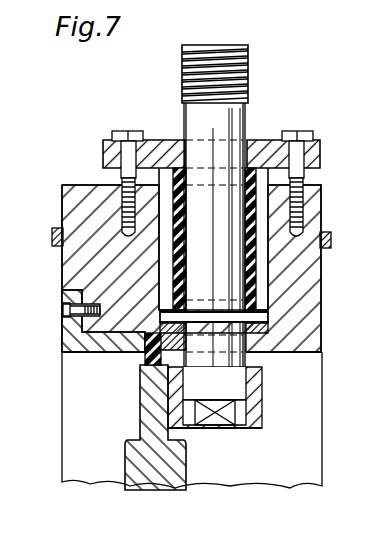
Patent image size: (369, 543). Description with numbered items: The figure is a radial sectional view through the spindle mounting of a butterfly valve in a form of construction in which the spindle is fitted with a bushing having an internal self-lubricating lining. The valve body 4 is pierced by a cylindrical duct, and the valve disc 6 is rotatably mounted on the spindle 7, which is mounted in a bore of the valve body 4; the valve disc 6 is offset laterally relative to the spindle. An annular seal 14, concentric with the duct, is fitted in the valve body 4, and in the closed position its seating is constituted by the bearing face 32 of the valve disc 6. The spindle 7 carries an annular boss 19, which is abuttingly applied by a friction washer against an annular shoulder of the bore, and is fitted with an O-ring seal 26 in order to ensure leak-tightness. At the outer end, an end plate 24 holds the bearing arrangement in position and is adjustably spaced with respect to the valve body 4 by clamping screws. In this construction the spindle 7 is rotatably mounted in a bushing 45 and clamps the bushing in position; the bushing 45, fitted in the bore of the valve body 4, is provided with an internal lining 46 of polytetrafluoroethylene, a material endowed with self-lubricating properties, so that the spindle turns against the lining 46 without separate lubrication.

The valve body 4 is at (312, 275).
The valve disc 6 is at (148, 468).
The spindle 7 is at (217, 118).
The annular seal 14 is at (145, 355).
The annular boss 19 is at (278, 318).
The end plate 24 is at (163, 150).
The O-ring seal 26 is at (270, 300).
The bearing face 32 is at (145, 378).
The bushing 45 is at (258, 210).
The internal lining 46 is at (248, 240).